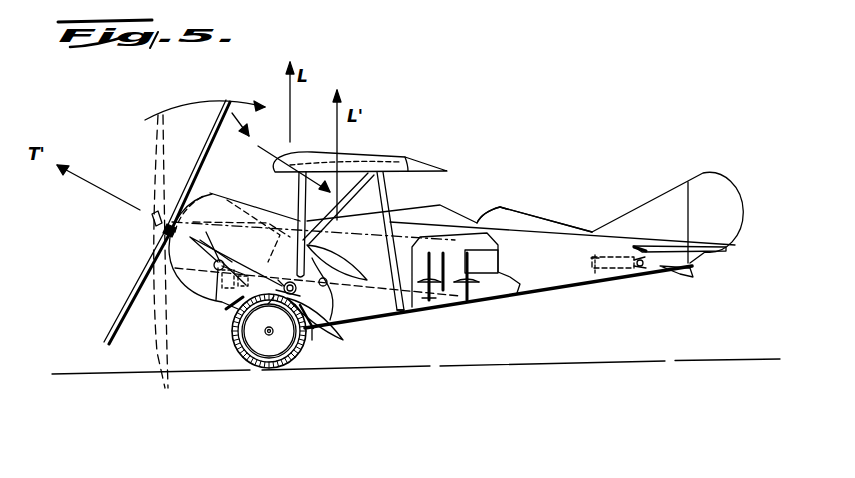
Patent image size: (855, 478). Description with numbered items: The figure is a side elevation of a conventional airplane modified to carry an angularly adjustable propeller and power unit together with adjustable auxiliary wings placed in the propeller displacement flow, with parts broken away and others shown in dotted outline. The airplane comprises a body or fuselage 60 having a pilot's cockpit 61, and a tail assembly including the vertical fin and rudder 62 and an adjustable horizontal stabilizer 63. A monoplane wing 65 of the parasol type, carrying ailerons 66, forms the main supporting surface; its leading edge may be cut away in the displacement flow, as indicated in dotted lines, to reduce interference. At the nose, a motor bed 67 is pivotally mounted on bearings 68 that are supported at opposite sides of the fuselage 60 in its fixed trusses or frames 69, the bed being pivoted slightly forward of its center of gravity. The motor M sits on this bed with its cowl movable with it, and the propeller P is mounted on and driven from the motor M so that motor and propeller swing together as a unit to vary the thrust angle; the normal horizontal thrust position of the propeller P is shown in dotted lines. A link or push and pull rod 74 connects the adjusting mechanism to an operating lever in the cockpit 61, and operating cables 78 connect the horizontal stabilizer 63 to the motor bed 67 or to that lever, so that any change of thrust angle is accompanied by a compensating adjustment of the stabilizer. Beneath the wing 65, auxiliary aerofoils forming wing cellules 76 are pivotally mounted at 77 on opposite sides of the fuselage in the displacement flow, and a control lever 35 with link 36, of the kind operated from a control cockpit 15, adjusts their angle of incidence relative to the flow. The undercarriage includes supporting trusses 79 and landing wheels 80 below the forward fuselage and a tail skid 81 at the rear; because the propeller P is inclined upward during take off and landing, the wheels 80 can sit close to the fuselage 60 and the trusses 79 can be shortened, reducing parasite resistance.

The propeller P is at (189, 168).
The motor M is at (221, 208).
The control cockpit 15 is at (468, 256).
The control lever 35 is at (412, 254).
The push and pull rod or link 36 is at (418, 312).
The fuselage 60 is at (532, 228).
The pilot's cockpit 61 is at (478, 220).
The vertical fin and rudder 62 is at (725, 200).
The adjustable horizontal stabilizer 63 is at (666, 246).
The monoplane wing 65 is at (366, 160).
The ailerons 66 is at (420, 168).
The motor bed 67 is at (170, 262).
The bearings 68 is at (122, 347).
The fixed trusses or frames 69 is at (258, 248).
The link or push and pull rod 74 is at (453, 303).
The wing cellules 76 is at (320, 326).
The pivot 77 is at (327, 279).
The operating cables 78 is at (588, 262).
The supporting trusses 79 is at (313, 328).
The landing wheels 80 is at (266, 362).
The tail skid 81 is at (671, 276).